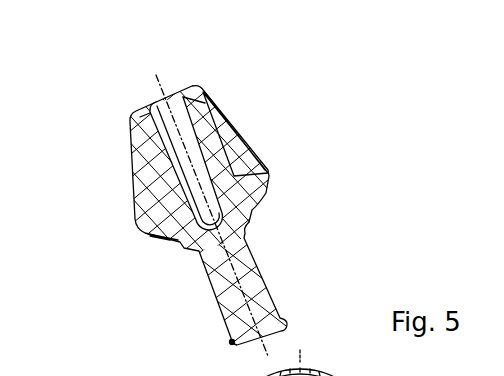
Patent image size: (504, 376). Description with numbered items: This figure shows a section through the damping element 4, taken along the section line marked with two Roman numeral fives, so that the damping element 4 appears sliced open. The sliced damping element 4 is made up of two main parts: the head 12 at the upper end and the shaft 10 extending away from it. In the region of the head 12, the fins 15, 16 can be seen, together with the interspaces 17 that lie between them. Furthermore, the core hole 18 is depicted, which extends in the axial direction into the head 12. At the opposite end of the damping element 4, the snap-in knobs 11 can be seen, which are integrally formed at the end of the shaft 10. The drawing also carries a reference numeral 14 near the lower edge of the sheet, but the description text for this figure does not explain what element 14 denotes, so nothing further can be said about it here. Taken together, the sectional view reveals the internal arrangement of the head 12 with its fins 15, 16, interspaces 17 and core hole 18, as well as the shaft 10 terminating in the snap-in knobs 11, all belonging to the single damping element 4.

The damping element 4 is at (300, 186).
The shaft 10 is at (258, 276).
The snap-in knobs 11 is at (290, 320).
The head 12 is at (114, 123).
The support wheel 14 is at (290, 372).
The fin 15 is at (259, 201).
The fin 16 is at (136, 188).
The interspaces 17 is at (234, 145).
The core hole 18 is at (176, 118).